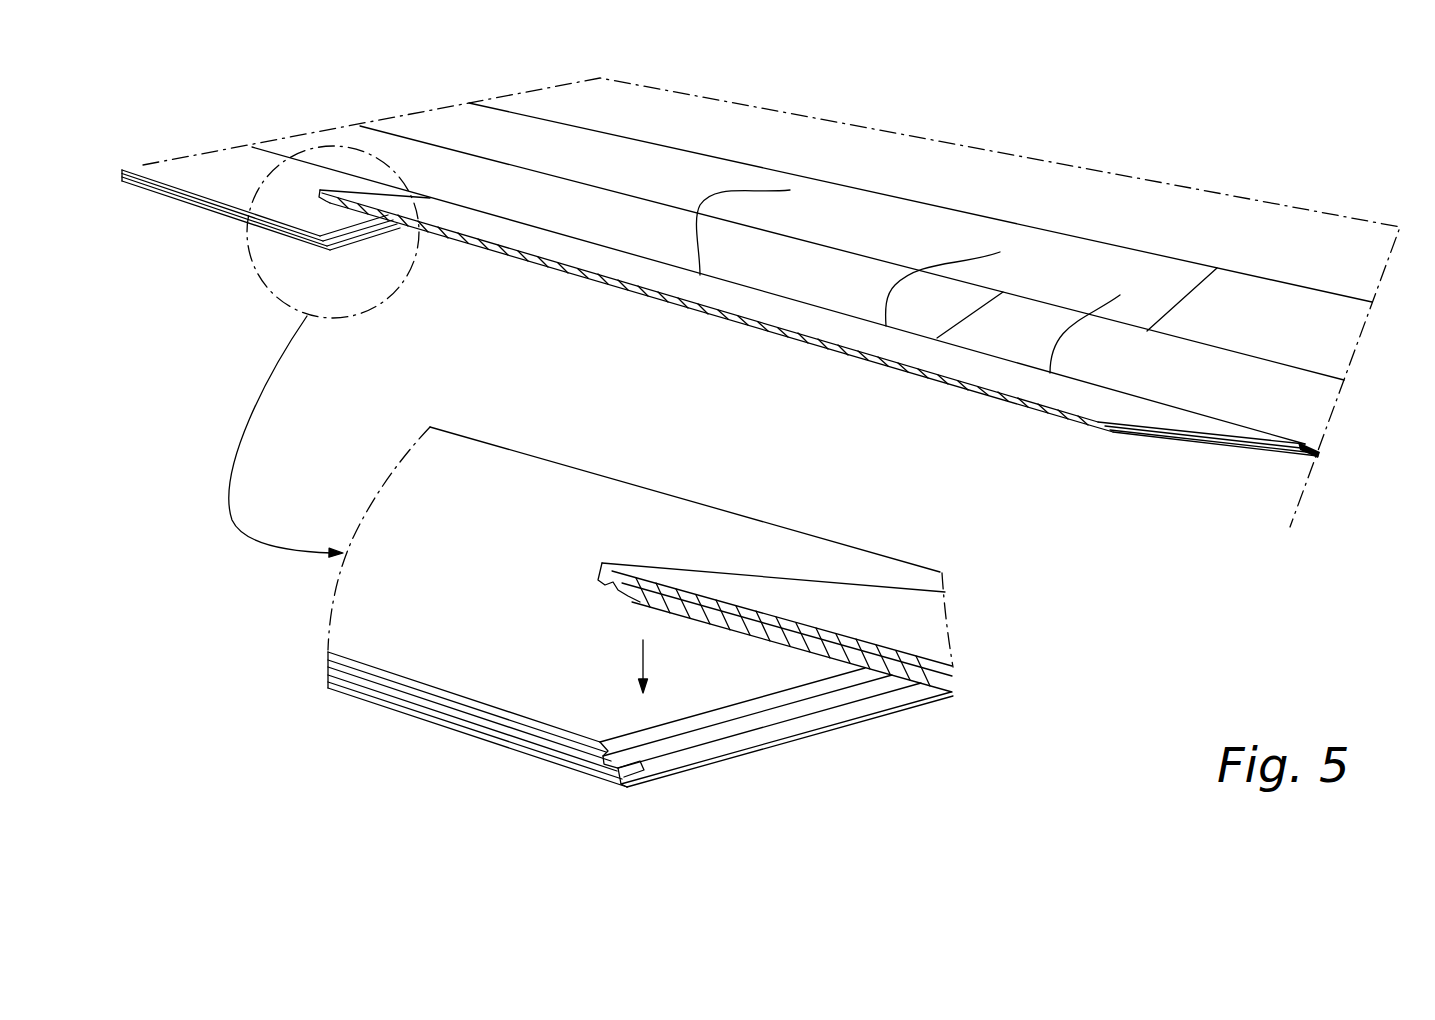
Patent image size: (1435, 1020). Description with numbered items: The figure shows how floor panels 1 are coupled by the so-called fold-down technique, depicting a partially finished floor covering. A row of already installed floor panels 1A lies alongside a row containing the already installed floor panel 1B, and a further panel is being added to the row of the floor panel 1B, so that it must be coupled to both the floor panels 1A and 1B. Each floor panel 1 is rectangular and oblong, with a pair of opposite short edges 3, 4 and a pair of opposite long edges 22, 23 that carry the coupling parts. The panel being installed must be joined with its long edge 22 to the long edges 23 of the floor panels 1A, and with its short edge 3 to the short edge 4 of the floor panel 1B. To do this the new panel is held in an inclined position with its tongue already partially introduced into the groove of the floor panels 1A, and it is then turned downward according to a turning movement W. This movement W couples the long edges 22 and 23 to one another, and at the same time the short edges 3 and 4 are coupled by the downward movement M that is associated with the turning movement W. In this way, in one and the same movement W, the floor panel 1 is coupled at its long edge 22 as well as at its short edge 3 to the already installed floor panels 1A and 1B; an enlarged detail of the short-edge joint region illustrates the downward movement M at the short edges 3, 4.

The floor panel 1 is at (435, 128).
The already installed floor panels 1A is at (827, 275).
The already installed floor panel 1B is at (222, 177).
The short edge 3 is at (296, 206).
The short edge 4 is at (372, 264).
The long edge 22 is at (790, 190).
The long edge 23 is at (1000, 252).
The turning movement W is at (507, 305).
The downward movement M is at (643, 655).